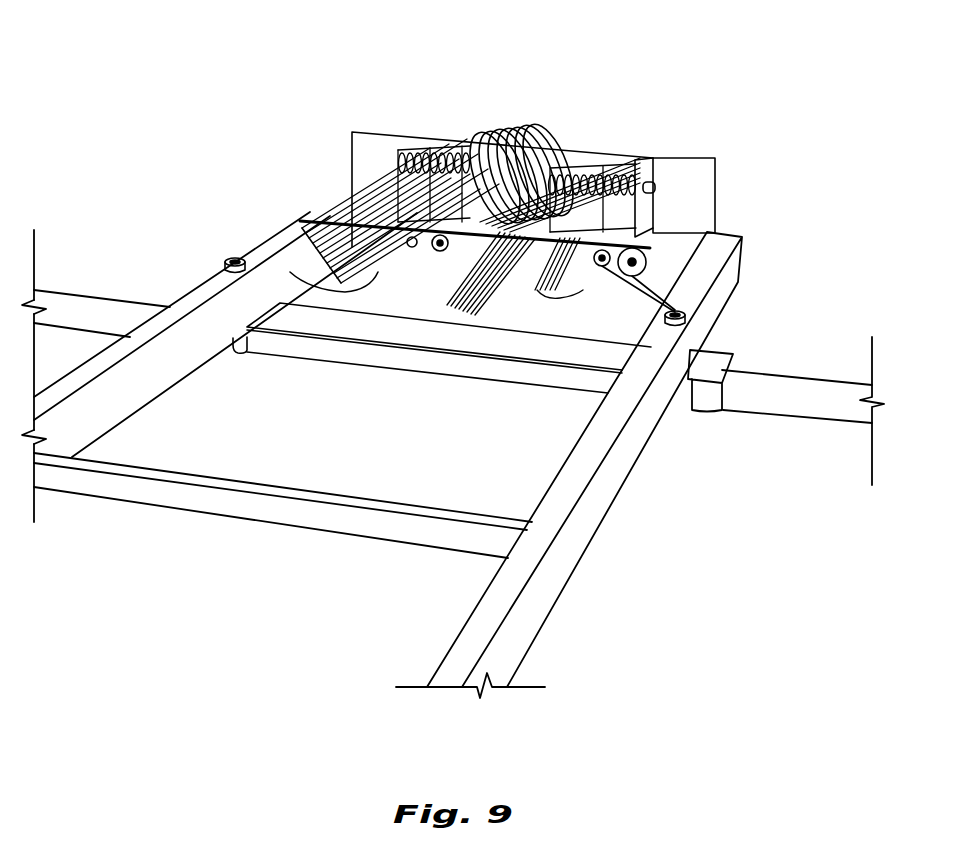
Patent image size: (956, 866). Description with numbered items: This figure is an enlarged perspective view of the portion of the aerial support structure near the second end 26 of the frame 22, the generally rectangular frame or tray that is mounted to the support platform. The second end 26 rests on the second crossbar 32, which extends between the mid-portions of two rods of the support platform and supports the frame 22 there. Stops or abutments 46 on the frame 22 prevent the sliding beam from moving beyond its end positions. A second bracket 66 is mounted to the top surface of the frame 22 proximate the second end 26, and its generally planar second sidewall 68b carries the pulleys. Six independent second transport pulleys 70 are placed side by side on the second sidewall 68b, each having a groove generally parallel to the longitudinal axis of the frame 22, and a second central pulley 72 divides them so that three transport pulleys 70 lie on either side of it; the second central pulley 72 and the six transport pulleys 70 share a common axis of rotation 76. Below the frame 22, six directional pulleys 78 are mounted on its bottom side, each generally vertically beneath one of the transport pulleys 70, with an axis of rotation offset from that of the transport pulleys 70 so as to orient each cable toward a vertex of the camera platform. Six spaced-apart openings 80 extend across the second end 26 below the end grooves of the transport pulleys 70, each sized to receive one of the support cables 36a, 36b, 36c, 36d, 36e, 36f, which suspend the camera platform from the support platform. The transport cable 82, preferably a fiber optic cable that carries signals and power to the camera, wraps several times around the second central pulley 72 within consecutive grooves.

The frame 22 is at (587, 508).
The second end 26 is at (727, 292).
The second crossbar 32 is at (757, 400).
The first support cable 36a is at (404, 165).
The second support cable 36b is at (428, 155).
The third support cable 36c is at (458, 150).
The fourth support cable 36d is at (585, 150).
The fifth support cable 36e is at (605, 155).
The sixth support cable 36f is at (636, 168).
The stop 46 is at (226, 262).
The second bracket 66 is at (688, 168).
The second sidewall 68b is at (695, 220).
The second transport pulley 70 is at (668, 207).
The second central pulley 72 is at (519, 125).
The common axis of rotation 76 is at (657, 188).
The directional pulley 78 is at (730, 265).
The opening 80 is at (622, 272).
The transport cable 82 is at (300, 272).